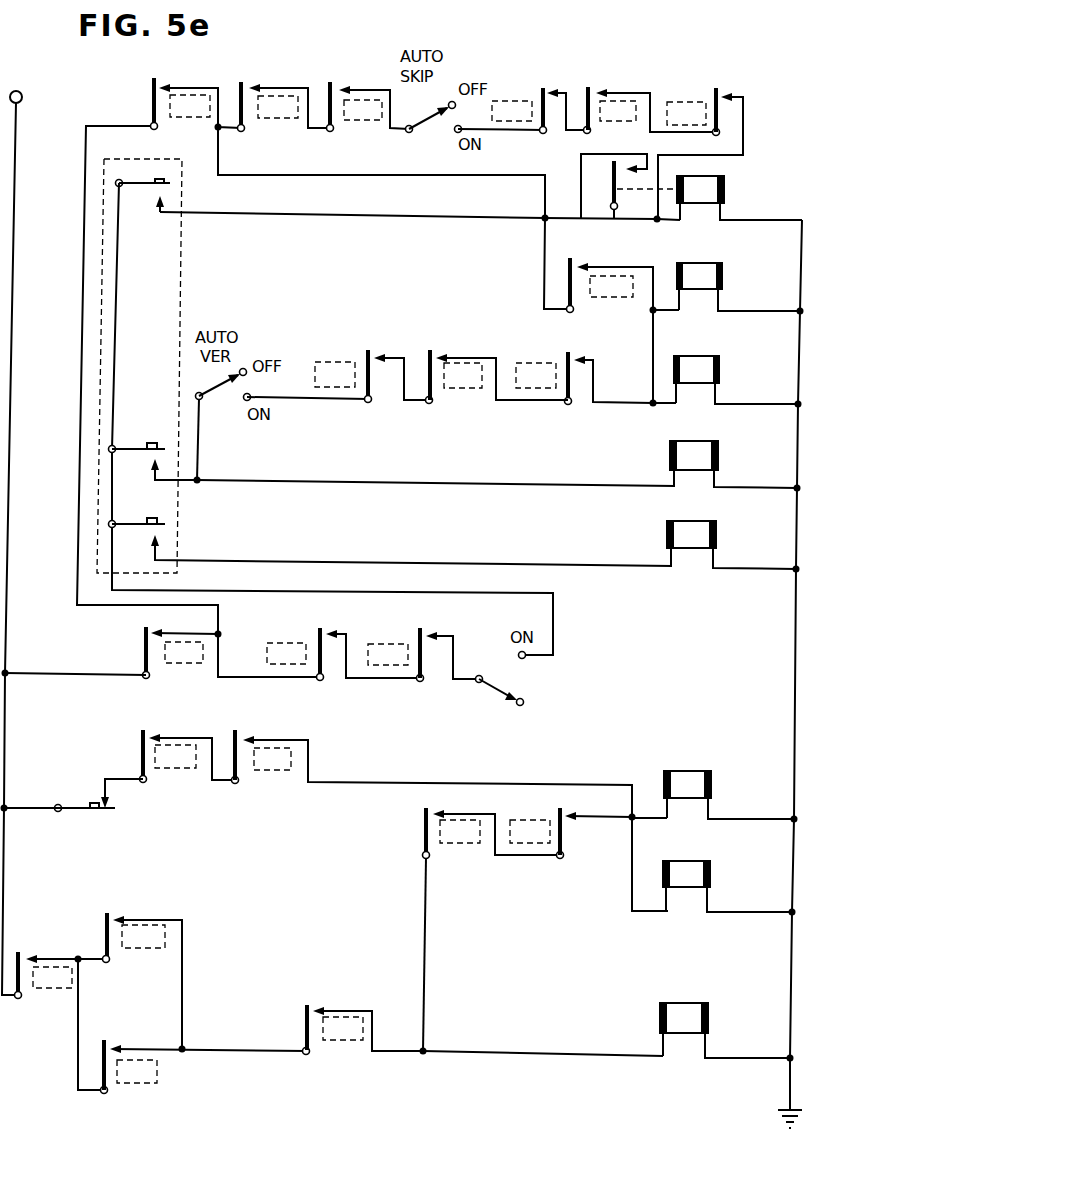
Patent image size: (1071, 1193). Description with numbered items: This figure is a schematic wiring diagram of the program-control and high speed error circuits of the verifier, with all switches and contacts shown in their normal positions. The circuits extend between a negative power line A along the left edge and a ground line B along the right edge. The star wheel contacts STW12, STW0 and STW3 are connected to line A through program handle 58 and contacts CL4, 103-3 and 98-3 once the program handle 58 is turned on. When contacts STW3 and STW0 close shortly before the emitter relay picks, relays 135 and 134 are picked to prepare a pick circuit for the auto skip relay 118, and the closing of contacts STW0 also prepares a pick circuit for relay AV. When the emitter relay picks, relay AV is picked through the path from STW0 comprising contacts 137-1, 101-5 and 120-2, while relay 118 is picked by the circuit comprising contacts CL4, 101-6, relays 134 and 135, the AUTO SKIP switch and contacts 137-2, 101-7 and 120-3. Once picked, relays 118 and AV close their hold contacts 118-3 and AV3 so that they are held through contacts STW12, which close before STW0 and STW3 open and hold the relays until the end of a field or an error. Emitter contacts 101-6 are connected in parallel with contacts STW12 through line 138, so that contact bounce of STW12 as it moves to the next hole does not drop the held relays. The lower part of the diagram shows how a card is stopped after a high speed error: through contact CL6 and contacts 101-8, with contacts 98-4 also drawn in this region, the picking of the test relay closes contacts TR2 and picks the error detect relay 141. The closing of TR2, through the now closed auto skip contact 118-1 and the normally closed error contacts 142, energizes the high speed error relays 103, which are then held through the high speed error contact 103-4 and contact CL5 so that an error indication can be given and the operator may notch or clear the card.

The negative power line A is at (21, 93).
The ground line B is at (790, 1090).
The emitter contacts 101-6 is at (163, 86).
The relay 134 is at (275, 120).
The relay 135 is at (357, 122).
The contacts 137-2 is at (551, 90).
The emitter relay contacts 101-7 is at (597, 92).
The contacts 120-3 is at (724, 96).
The auto skip relay 118 is at (727, 188).
The hold contacts 118-3 is at (633, 146).
The hold contacts AV3 is at (584, 266).
The relay AV is at (723, 271).
The contacts 120-2 is at (577, 360).
The contacts 137-1 is at (380, 356).
The emitter relay contacts 101-5 is at (442, 357).
The star wheel contacts STW12 is at (180, 152).
The star wheel contacts STW0 is at (392, 451).
The star wheel contacts STW3 is at (391, 530).
The line 138 is at (376, 174).
The contacts CL4 is at (158, 630).
The contacts 103-3 is at (330, 634).
The contacts 98-3 is at (431, 636).
The program handle 58 is at (490, 696).
The contact CL5 is at (153, 737).
The high speed error contact 103-4 is at (250, 740).
The auto skip contact 118-1 is at (436, 815).
The error-2 contacts 142 is at (569, 816).
The high speed error relays 103 is at (696, 775).
The error detect relay 141 is at (688, 1008).
The contacts 98-4 is at (120, 920).
The contact CL6 is at (29, 958).
The emitter relay contacts 101-8 is at (113, 1048).
The test relay contacts TR2 is at (320, 1010).